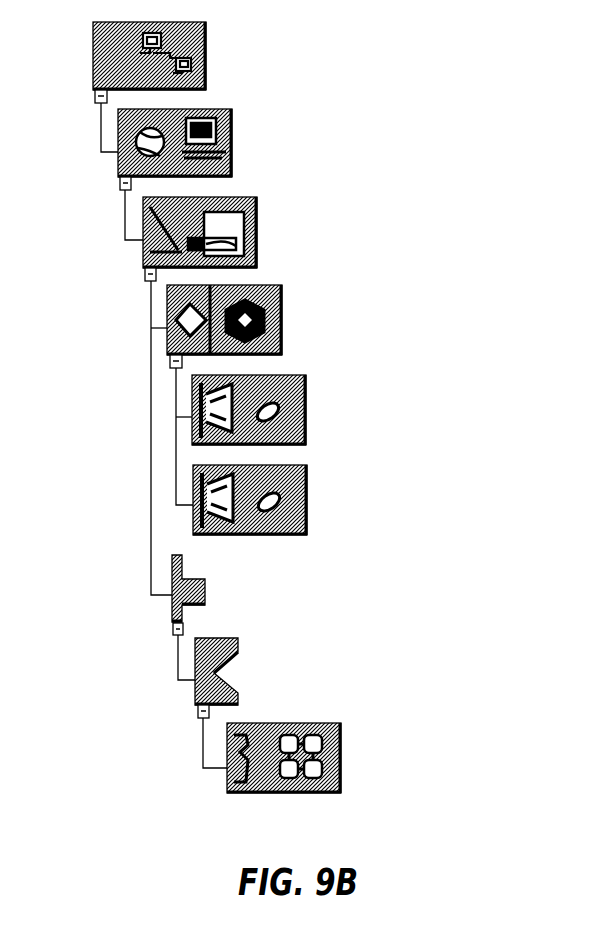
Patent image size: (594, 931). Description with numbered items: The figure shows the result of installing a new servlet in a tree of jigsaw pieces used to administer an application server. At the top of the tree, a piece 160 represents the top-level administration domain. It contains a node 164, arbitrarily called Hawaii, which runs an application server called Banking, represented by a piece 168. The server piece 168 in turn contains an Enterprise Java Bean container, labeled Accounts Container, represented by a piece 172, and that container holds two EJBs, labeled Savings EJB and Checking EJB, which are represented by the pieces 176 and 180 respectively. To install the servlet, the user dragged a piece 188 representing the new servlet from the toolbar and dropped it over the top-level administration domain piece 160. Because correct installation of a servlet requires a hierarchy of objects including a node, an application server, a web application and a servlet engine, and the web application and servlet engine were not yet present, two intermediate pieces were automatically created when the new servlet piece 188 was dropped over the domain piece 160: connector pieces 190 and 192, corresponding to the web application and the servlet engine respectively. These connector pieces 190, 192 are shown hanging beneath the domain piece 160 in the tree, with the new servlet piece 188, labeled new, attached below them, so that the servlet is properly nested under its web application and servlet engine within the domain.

The top-level administration domain piece 160 is at (92, 53).
The node 164 is at (232, 127).
The application server piece 168 is at (257, 222).
The EJB container piece 172 is at (282, 312).
The Savings EJB piece 176 is at (306, 405).
The Checking EJB piece 180 is at (307, 490).
The web application connector piece 190 is at (205, 596).
The servlet engine connector piece 192 is at (240, 692).
The new servlet piece 188 is at (340, 748).